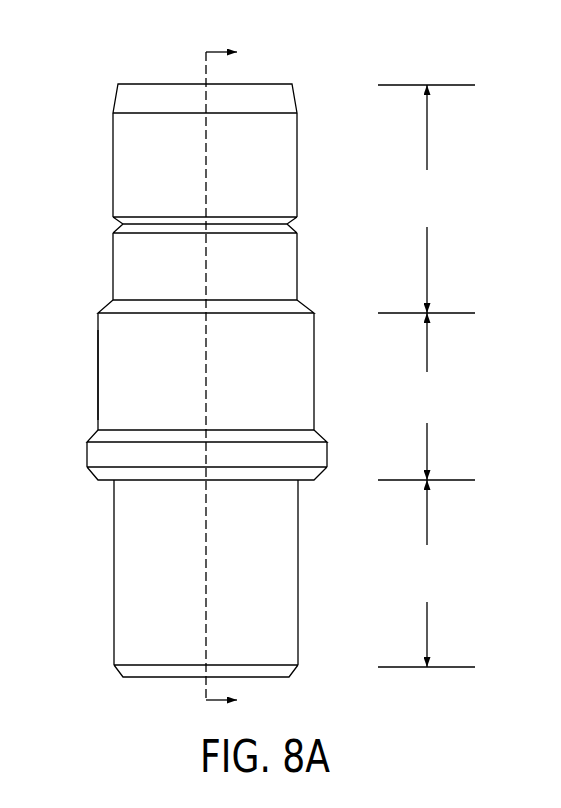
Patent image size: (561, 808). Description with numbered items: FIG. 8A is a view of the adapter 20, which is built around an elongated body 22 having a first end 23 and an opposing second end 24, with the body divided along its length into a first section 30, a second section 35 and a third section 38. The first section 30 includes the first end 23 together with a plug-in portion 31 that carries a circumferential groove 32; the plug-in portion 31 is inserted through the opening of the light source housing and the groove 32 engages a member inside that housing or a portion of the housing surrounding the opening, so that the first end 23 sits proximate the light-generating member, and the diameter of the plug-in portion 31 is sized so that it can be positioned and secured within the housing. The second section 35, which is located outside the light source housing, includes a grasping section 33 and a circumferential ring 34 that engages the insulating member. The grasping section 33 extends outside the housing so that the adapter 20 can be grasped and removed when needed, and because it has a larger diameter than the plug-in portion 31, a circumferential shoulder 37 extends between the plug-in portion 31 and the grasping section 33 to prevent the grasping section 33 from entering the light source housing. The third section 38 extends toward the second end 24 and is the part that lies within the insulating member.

The adapter 20 is at (326, 76).
The elongated body 22 is at (317, 363).
The first end 23 is at (113, 111).
The second end 24 is at (298, 667).
The first section 30 is at (426, 199).
The plug-in portion 31 is at (298, 270).
The circumferential groove 32 is at (293, 225).
The grasping section 33 is at (108, 378).
The circumferential ring 34 is at (317, 453).
The second section 35 is at (426, 396).
The circumferential shoulder 37 is at (310, 308).
The third section 38 is at (426, 573).